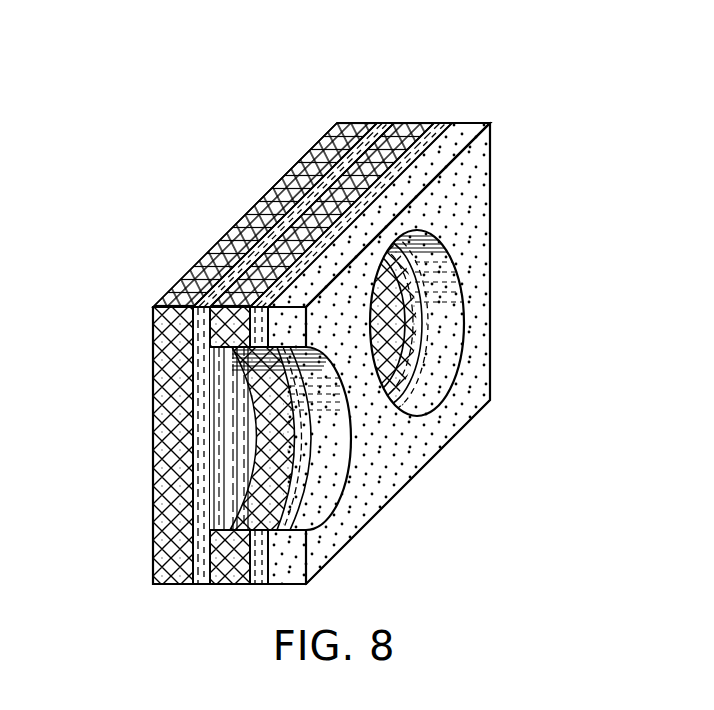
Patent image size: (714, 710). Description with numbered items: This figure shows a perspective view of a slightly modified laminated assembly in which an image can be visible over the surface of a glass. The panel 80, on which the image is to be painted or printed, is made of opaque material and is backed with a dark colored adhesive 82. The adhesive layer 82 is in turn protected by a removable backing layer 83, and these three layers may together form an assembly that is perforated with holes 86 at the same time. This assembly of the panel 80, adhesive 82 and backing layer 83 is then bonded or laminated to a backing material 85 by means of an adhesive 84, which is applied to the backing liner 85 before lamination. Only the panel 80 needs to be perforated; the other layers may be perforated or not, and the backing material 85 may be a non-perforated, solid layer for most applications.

The panel 80 is at (490, 177).
The dark colored adhesive 82 is at (437, 123).
The removable backing layer 83 is at (408, 123).
The adhesive 84 is at (383, 123).
The backing material 85 is at (198, 258).
The holes 86 is at (453, 333).